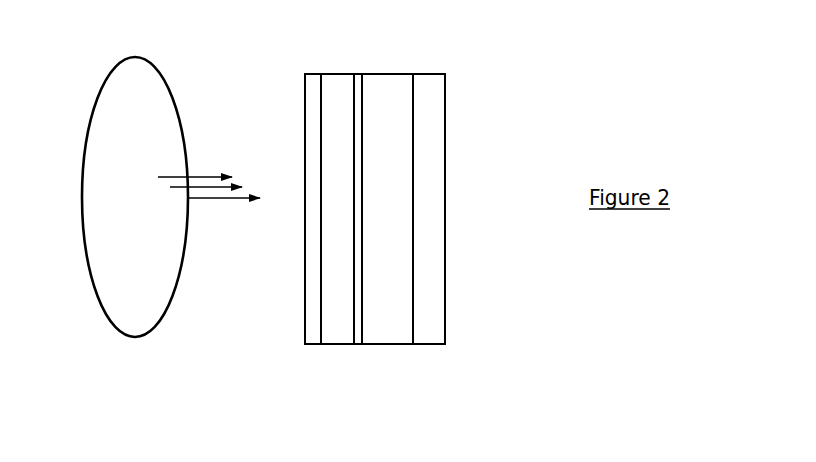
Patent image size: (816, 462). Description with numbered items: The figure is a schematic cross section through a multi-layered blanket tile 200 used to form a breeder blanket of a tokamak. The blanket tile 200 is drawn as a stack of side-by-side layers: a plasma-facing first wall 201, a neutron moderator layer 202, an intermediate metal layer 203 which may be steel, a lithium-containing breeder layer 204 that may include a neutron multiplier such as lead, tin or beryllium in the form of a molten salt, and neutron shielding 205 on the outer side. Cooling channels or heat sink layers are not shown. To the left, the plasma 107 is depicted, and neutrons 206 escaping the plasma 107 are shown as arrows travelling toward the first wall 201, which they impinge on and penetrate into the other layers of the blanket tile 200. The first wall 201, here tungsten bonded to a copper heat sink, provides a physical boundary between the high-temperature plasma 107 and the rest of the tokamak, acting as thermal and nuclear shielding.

The plasma 107 is at (102, 130).
The blanket tile 200 is at (373, 63).
The first wall 201 is at (311, 333).
The neutron moderator layer 202 is at (332, 335).
The intermediate metal layer 203 is at (358, 256).
The lithium-containing breeder layer 204 is at (397, 162).
The neutron shielding 205 is at (423, 207).
The neutrons 206 is at (193, 175).